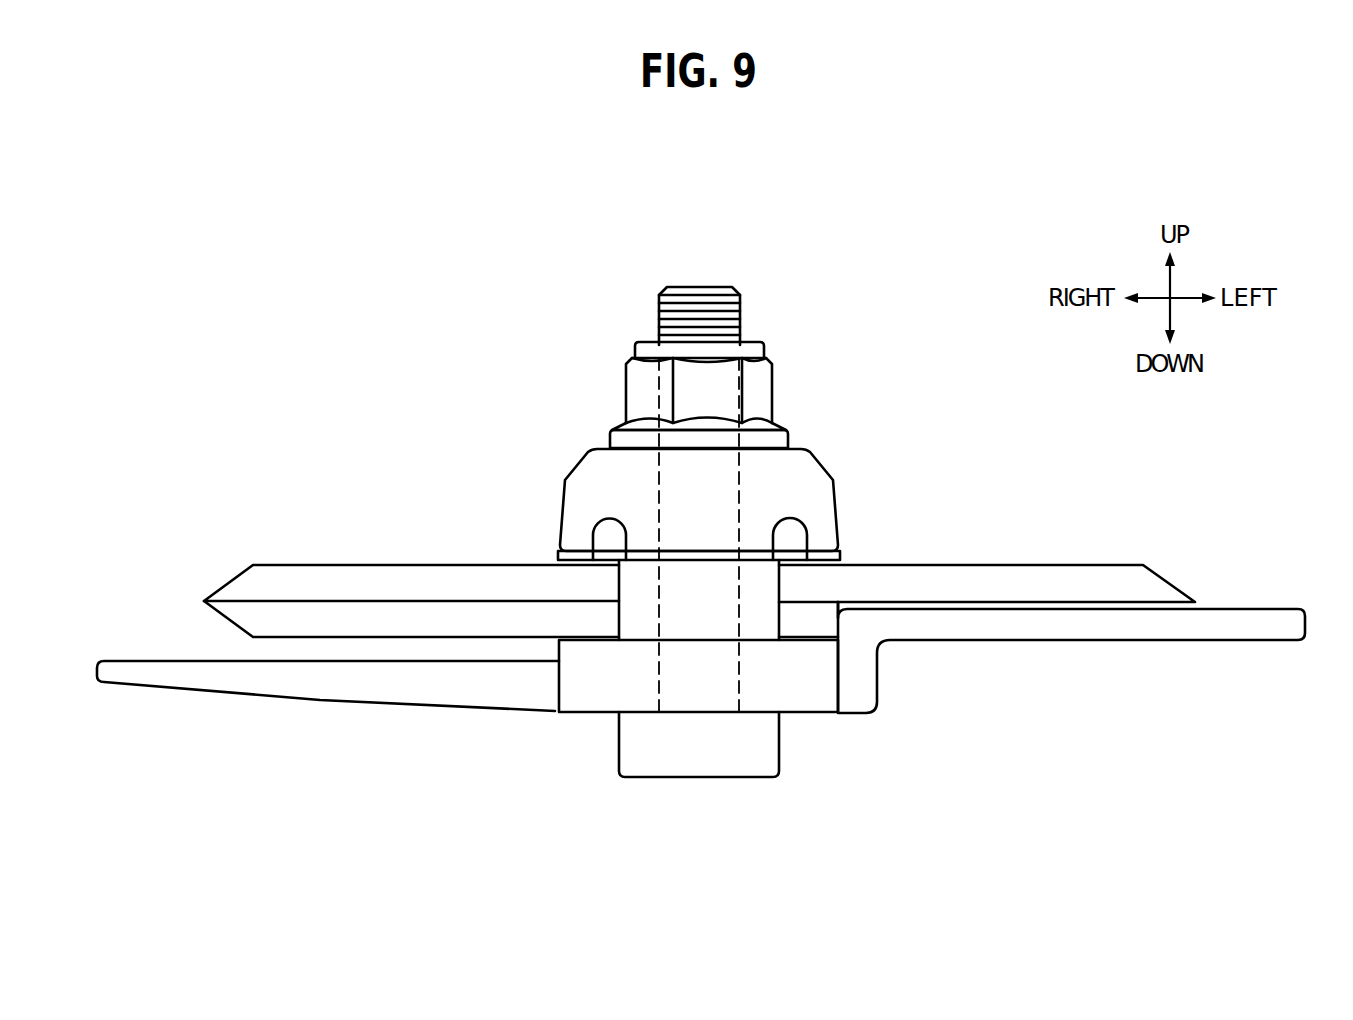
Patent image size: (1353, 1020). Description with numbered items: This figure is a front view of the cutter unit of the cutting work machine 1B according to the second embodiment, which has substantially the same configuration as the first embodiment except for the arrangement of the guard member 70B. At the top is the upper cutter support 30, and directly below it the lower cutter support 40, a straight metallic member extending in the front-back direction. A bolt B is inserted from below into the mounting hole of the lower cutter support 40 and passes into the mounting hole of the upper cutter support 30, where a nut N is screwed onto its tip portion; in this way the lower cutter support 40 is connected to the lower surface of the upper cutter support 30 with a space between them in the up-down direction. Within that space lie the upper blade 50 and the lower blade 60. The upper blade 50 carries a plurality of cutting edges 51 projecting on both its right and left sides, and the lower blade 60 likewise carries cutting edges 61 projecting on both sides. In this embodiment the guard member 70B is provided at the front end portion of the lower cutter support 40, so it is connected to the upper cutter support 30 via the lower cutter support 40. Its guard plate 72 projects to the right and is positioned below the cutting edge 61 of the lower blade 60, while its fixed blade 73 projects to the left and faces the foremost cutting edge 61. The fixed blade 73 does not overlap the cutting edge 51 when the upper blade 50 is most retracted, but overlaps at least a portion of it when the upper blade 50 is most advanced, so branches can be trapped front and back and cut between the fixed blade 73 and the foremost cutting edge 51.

The cutting work machine 1B is at (470, 290).
The bolt B is at (728, 319).
The nut N is at (762, 386).
The upper cutter support 30 is at (805, 468).
The lower cutter support 40 is at (587, 693).
The upper blade 50 is at (341, 552).
The cutting edge 51 is at (433, 580).
The lower blade 60 is at (458, 650).
The cutting edge 61 is at (383, 615).
The guard member 70B is at (887, 721).
The guard plate 72 is at (304, 682).
The fixed blade 73 is at (1105, 625).